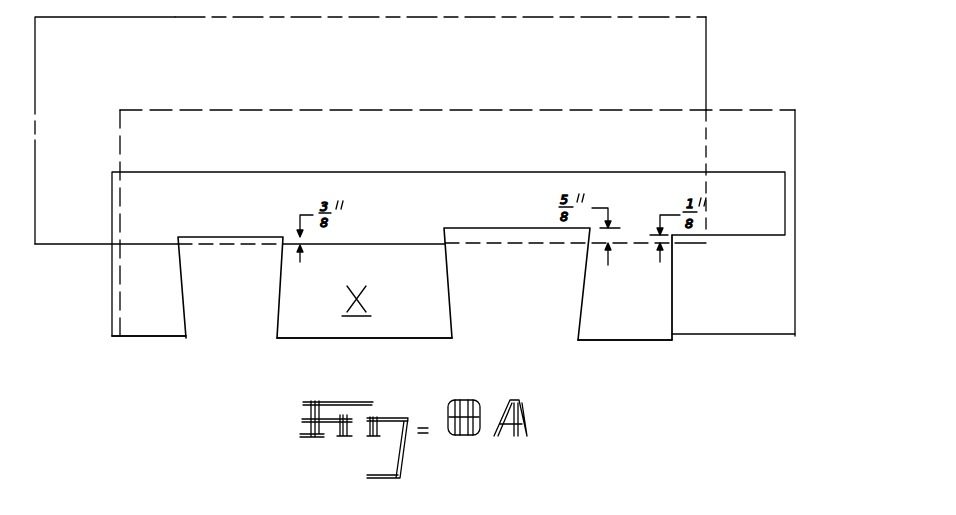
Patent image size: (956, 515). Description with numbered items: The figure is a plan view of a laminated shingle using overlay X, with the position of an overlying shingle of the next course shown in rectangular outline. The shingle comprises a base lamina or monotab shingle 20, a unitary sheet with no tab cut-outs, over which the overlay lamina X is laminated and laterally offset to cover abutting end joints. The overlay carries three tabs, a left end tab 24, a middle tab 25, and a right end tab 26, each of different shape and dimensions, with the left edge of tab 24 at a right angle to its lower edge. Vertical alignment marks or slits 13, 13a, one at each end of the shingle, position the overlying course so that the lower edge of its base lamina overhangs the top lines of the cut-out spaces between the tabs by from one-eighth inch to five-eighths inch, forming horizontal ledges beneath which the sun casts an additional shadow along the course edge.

The vertical alignment mark 13 is at (35, 108).
The vertical alignment mark 13a is at (706, 110).
The base lamina or monotab shingle 20 is at (232, 321).
The left end tab of overlay X 24 is at (148, 320).
The tab of overlay X 25 is at (325, 323).
The tab of overlay X 26 is at (628, 329).